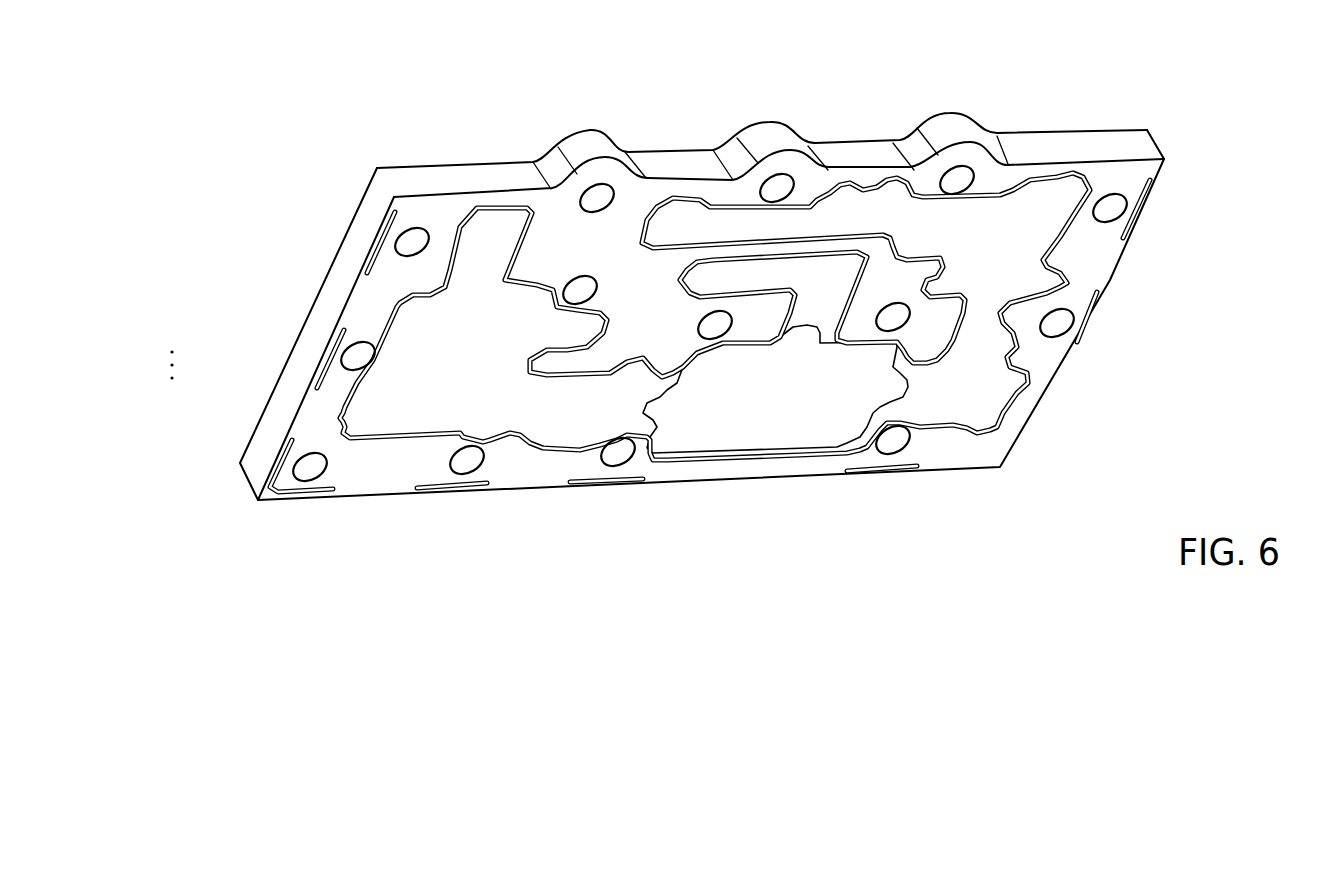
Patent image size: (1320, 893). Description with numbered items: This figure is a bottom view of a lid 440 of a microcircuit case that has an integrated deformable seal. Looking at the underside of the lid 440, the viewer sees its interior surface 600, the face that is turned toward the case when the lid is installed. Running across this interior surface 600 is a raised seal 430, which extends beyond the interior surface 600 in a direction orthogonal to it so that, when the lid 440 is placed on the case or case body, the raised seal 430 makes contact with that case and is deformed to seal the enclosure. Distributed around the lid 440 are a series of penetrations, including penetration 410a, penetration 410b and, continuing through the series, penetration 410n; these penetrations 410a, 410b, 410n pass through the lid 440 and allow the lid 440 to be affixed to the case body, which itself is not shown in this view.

The lid 440 is at (390, 165).
The raised seal 430 is at (670, 197).
The penetration 410a is at (409, 243).
The penetration 410b is at (356, 357).
The penetration 410n is at (308, 468).
The interior surface 600 is at (788, 467).